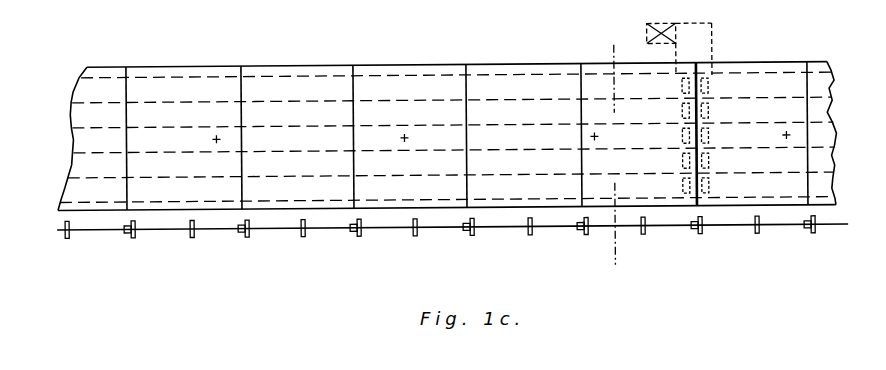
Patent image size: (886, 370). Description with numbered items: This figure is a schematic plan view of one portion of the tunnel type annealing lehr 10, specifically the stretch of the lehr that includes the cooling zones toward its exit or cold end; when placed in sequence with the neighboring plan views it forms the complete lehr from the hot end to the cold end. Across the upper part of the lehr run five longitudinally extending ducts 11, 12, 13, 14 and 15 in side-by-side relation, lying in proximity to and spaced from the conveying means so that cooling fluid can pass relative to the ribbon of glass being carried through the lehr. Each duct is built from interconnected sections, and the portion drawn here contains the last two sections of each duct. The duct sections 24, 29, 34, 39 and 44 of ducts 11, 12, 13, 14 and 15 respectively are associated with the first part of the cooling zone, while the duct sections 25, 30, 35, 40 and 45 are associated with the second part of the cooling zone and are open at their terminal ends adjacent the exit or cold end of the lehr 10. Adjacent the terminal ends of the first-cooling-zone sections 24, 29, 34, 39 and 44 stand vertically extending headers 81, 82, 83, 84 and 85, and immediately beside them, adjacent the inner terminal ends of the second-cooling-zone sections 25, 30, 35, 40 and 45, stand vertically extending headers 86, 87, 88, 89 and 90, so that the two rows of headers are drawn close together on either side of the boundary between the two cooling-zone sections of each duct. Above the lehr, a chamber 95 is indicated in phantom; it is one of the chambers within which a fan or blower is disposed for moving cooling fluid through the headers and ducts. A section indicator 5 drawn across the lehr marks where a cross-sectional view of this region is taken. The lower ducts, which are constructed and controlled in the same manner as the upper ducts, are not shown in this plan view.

The tunnel type annealing lehr 10 is at (500, 66).
The upper duct 11 is at (834, 90).
The upper duct 12 is at (834, 116).
The upper duct 13 is at (834, 140).
The upper duct 14 is at (834, 166).
The upper duct 15 is at (834, 190).
The duct section 24 is at (289, 88).
The duct section 29 is at (289, 113).
The duct section 34 is at (289, 138).
The duct section 39 is at (290, 163).
The duct section 44 is at (290, 188).
The duct section 25 is at (766, 85).
The duct section 30 is at (766, 110).
The duct section 35 is at (766, 135).
The duct section 40 is at (767, 160).
The duct section 45 is at (767, 184).
The vertically extending header 81 is at (683, 90).
The vertically extending header 82 is at (683, 116).
The vertically extending header 83 is at (683, 140).
The vertically extending header 84 is at (683, 166).
The vertically extending header 85 is at (683, 190).
The vertically extending header 86 is at (709, 92).
The vertically extending header 87 is at (709, 116).
The vertically extending header 88 is at (709, 142).
The vertically extending header 89 is at (709, 166).
The vertically extending header 90 is at (709, 191).
The chamber 95 is at (684, 38).
The section line 5- 5 is at (615, 49).